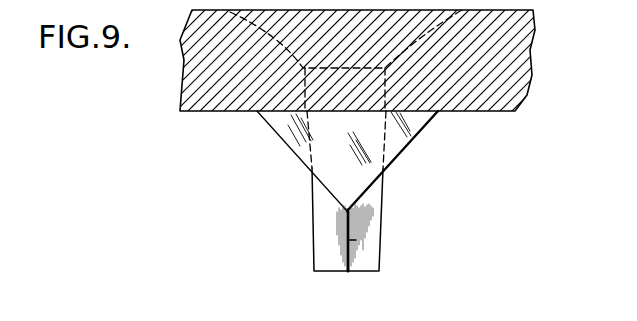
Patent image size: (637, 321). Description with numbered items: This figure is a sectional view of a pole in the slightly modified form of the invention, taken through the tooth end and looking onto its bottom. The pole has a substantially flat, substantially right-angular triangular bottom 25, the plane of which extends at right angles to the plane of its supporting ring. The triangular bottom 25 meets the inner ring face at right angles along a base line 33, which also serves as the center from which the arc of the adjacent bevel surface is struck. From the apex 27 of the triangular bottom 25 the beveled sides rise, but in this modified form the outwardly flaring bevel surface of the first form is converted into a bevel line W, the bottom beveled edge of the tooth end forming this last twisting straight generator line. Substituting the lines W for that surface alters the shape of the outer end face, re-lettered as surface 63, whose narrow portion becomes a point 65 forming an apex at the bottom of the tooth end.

The base line 33 is at (348, 112).
The triangular bottom 25 is at (333, 155).
The apex of triangle 27 is at (347, 209).
The flat radial face 63 is at (327, 272).
The point 65 is at (350, 273).
The bevel line W is at (356, 240).